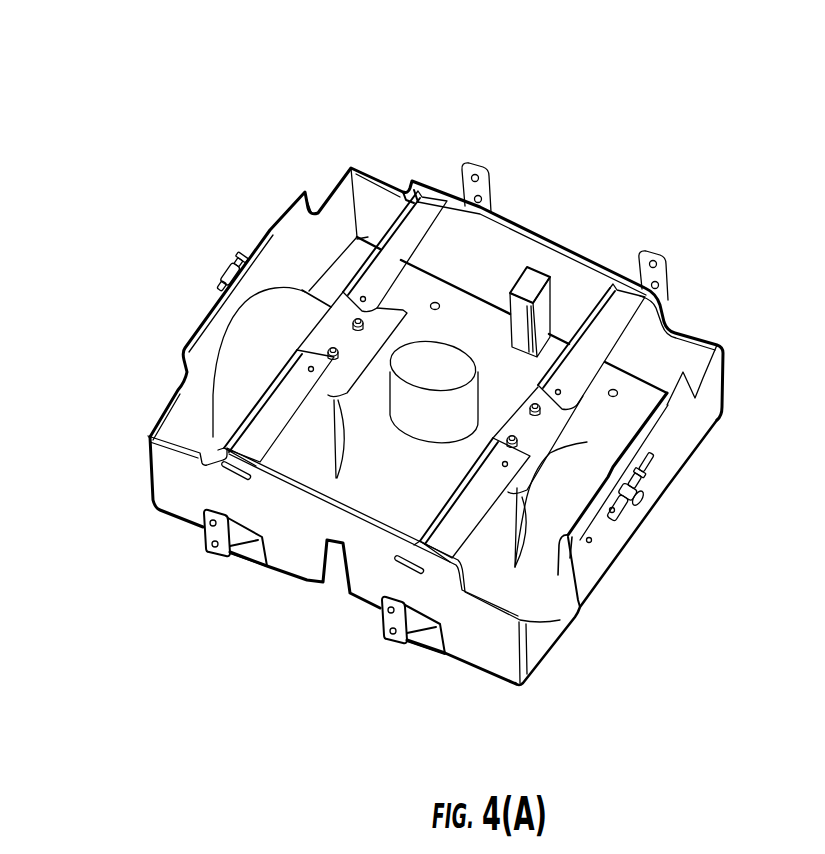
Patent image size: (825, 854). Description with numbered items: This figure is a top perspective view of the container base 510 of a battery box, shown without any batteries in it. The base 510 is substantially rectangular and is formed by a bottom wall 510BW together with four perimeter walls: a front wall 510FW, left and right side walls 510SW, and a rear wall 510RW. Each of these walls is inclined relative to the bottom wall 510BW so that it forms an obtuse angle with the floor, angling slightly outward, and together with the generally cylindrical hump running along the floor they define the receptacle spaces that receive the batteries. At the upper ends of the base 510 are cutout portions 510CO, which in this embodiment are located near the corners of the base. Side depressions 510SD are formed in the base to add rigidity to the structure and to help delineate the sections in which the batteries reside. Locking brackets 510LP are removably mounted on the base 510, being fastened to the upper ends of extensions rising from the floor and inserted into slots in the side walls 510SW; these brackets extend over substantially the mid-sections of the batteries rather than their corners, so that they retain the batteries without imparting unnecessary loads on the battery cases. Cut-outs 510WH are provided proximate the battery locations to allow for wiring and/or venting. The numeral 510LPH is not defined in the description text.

The container base 510 is at (303, 560).
The rear wall 510RW is at (285, 236).
The cutout portions 510CO is at (380, 177).
The side walls 510SW is at (508, 247).
The side depressions 510SD is at (534, 276).
The locking brackets 510LP is at (493, 458).
The bottom wall 510BW is at (645, 401).
The front wall 510FW is at (666, 426).
The cut-outs 510WH is at (583, 515).
The locating plate hole 510LPH is at (401, 568).